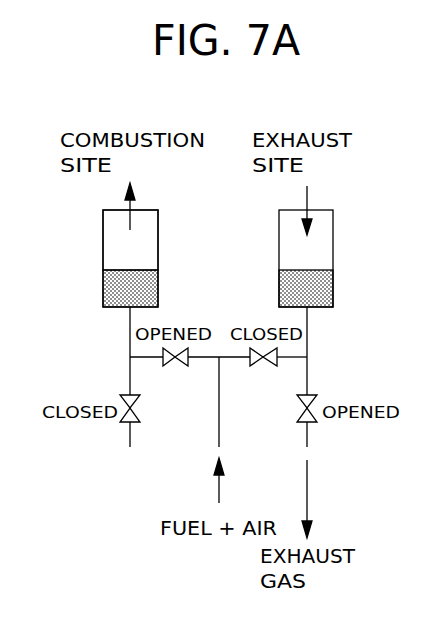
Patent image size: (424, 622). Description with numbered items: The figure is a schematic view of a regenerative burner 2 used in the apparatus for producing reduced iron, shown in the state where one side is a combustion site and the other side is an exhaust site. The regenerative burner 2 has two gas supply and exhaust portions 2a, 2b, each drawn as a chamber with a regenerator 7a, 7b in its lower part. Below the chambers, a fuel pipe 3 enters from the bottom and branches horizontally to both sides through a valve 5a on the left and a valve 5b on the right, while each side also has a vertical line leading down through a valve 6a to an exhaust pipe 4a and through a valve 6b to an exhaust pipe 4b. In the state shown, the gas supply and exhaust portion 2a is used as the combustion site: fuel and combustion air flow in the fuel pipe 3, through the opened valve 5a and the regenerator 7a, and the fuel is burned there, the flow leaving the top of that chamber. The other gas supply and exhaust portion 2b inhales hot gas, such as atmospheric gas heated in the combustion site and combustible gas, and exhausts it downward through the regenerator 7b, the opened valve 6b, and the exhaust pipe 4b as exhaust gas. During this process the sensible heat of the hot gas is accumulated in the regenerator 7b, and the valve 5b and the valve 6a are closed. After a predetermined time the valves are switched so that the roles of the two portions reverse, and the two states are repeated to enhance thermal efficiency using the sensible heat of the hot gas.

The regenerative burner 2 is at (86, 210).
The gas supply and exhaust portion 2a is at (94, 250).
The gas supply and exhaust portion 2b is at (343, 252).
The regenerator 7a is at (110, 292).
The regenerator 7b is at (325, 290).
The fuel pipe 3 is at (212, 433).
The exhaust pipe 4a is at (128, 435).
The exhaust pipe 4b is at (309, 435).
The valve 5a is at (179, 367).
The valve 5b is at (257, 367).
The valve 6a is at (141, 411).
The valve 6b is at (296, 411).